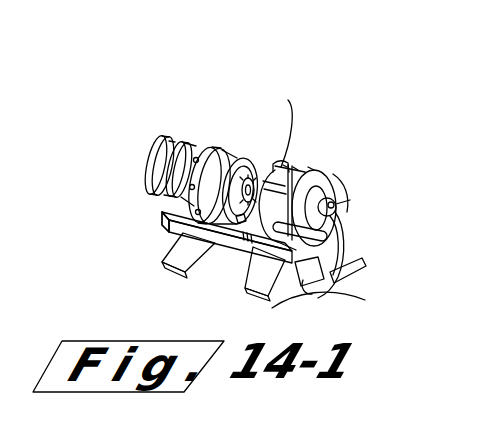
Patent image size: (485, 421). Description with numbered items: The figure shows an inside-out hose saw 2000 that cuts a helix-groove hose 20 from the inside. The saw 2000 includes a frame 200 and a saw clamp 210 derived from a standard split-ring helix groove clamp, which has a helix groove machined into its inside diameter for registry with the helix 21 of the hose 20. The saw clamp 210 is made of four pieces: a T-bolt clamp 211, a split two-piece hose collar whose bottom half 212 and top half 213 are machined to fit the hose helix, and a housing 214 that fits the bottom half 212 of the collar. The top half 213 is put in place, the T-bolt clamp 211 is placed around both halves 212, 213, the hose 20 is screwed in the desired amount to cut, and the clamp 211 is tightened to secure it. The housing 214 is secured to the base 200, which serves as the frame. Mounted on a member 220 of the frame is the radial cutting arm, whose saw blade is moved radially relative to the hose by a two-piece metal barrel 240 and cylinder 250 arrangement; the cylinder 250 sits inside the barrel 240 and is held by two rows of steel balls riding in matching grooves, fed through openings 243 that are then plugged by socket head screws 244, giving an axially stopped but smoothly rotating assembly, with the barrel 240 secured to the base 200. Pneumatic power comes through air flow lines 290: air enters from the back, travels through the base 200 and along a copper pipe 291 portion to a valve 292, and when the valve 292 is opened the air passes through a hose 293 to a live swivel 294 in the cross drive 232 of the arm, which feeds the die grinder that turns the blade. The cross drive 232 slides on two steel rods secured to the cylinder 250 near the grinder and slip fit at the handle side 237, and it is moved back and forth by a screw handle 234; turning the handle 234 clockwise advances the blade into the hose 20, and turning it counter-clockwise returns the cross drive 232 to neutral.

The inside-out hose saw 2000 is at (212, 52).
The hose 20 is at (149, 152).
The helix 21 is at (146, 163).
The T-bolt clamp 211 is at (149, 192).
The bottom half of hose collar 212 is at (160, 228).
The housing 214 is at (161, 261).
The frame 200 is at (215, 250).
The saw clamp 210 is at (213, 146).
The top half of hose collar 213 is at (219, 146).
The barrel 240 is at (246, 232).
The openings 243 is at (288, 100).
The screw handle 234 is at (293, 167).
The socket head screws 244 is at (287, 167).
The handle side 237 is at (308, 167).
The member 220 is at (313, 167).
The cross drive 232 is at (333, 210).
The hose 293 is at (333, 205).
The live swivel 294 is at (347, 201).
The valve 292 is at (337, 263).
The air flow lines 290 is at (337, 293).
The copper pipe 291 is at (330, 297).
The cylinder 250 is at (267, 245).